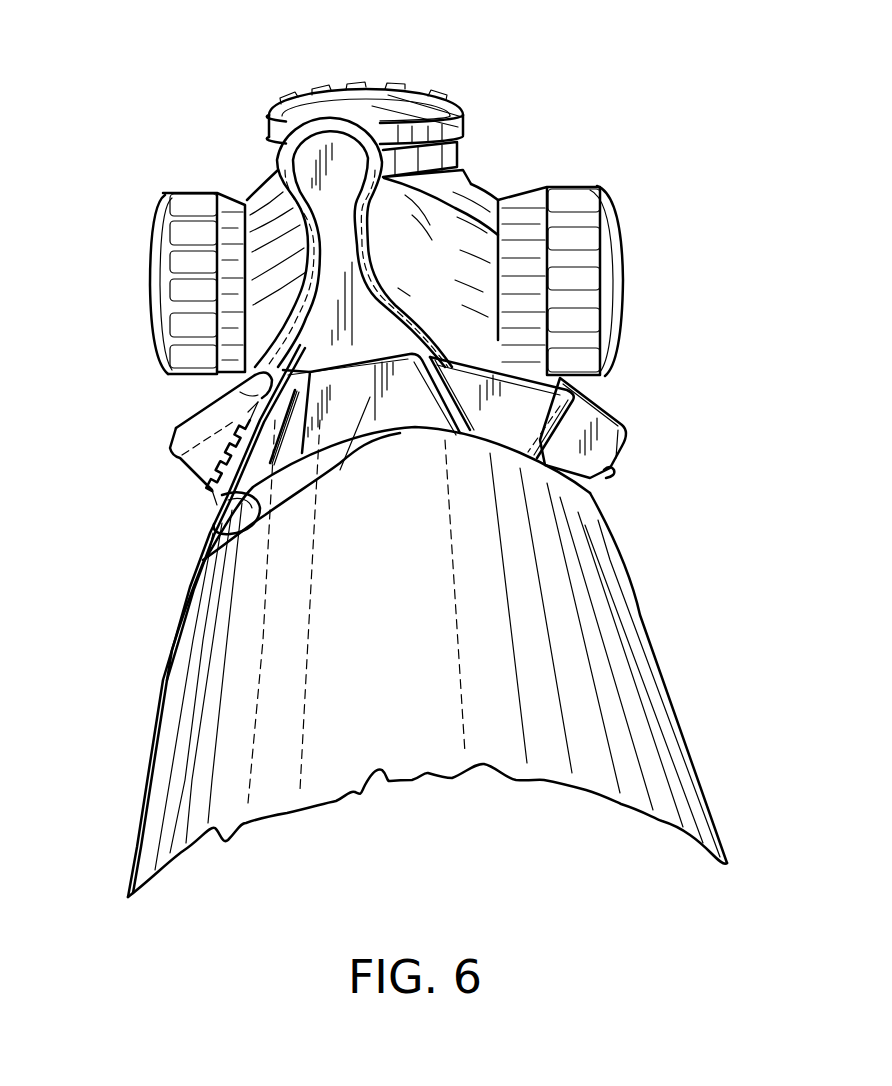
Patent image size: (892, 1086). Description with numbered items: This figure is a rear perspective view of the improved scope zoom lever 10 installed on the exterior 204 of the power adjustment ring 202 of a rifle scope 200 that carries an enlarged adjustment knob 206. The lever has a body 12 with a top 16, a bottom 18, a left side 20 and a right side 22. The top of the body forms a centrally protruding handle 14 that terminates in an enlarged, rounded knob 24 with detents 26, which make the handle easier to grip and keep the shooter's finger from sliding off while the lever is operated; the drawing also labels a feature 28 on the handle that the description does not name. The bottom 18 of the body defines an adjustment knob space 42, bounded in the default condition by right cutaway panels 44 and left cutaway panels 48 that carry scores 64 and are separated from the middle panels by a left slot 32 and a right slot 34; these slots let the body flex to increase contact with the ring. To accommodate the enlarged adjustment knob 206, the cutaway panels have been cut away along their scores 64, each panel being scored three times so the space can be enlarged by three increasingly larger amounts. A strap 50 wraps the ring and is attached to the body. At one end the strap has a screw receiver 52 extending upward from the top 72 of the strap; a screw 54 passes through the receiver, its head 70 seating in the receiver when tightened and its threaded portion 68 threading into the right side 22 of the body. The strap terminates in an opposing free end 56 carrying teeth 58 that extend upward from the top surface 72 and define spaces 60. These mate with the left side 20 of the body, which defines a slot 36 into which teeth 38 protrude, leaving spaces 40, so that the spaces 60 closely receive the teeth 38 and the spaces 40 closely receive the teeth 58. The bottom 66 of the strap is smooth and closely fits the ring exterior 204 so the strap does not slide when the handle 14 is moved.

The scope zoom lever 10 is at (270, 88).
The body 12 is at (428, 310).
The handle 14 is at (382, 210).
The top 16 is at (300, 365).
The bottom 18 is at (203, 560).
The left side 20 is at (180, 432).
The right side 22 is at (530, 368).
The knob 24 is at (446, 103).
The detents 26 is at (385, 90).
The hub loop 28 is at (330, 153).
The left slot 32 is at (288, 378).
The right slot 34 is at (418, 312).
The slot 36 is at (250, 425).
The teeth 38 is at (233, 452).
The spaces 40 is at (242, 437).
The adjustment knob space 42 is at (355, 367).
The right cutaway panels 44 is at (445, 352).
The left cutaway panels 48 is at (282, 412).
The strap 50 is at (635, 578).
The screw receiver 52 is at (597, 400).
The screw 54 is at (608, 470).
The free end 56 is at (268, 412).
The teeth 58 is at (214, 468).
The spaces 60 is at (220, 482).
The scores 64 is at (535, 365).
The bottom 66 is at (213, 530).
The threaded portion 68 is at (597, 392).
The head 70 is at (625, 443).
The top 72 is at (623, 558).
The rifle scope 200 is at (200, 713).
The power adjustment ring 202 is at (243, 650).
The exterior 204 is at (293, 588).
The adjustment knob 206 is at (205, 580).